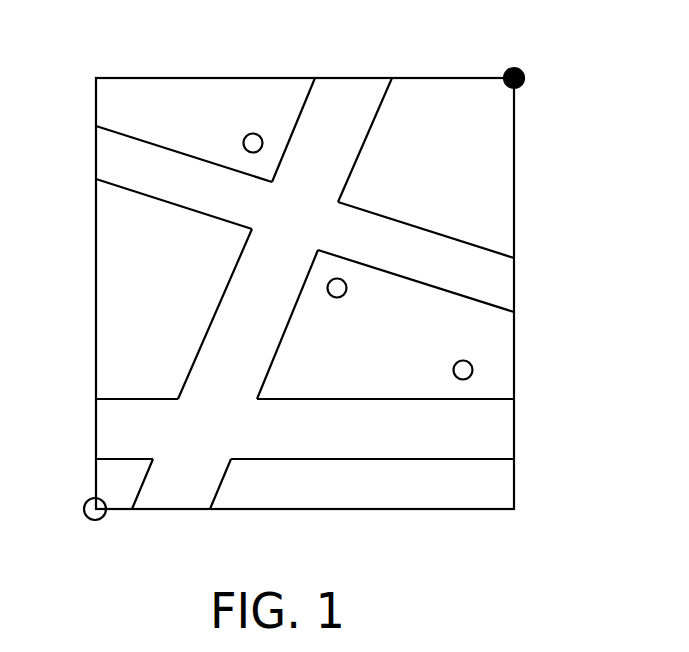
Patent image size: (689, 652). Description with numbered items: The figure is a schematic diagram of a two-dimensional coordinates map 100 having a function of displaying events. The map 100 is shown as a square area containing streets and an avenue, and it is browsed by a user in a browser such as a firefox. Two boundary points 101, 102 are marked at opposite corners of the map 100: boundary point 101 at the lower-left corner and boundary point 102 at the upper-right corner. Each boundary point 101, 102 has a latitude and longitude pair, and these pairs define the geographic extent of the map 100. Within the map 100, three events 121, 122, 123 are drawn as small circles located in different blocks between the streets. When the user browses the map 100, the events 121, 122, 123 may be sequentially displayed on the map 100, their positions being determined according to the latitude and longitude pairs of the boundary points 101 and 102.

The map 100 is at (514, 198).
The boundary point 101 is at (93, 520).
The boundary point 102 is at (525, 80).
The event 121 is at (243, 142).
The event 122 is at (337, 298).
The event 123 is at (453, 370).